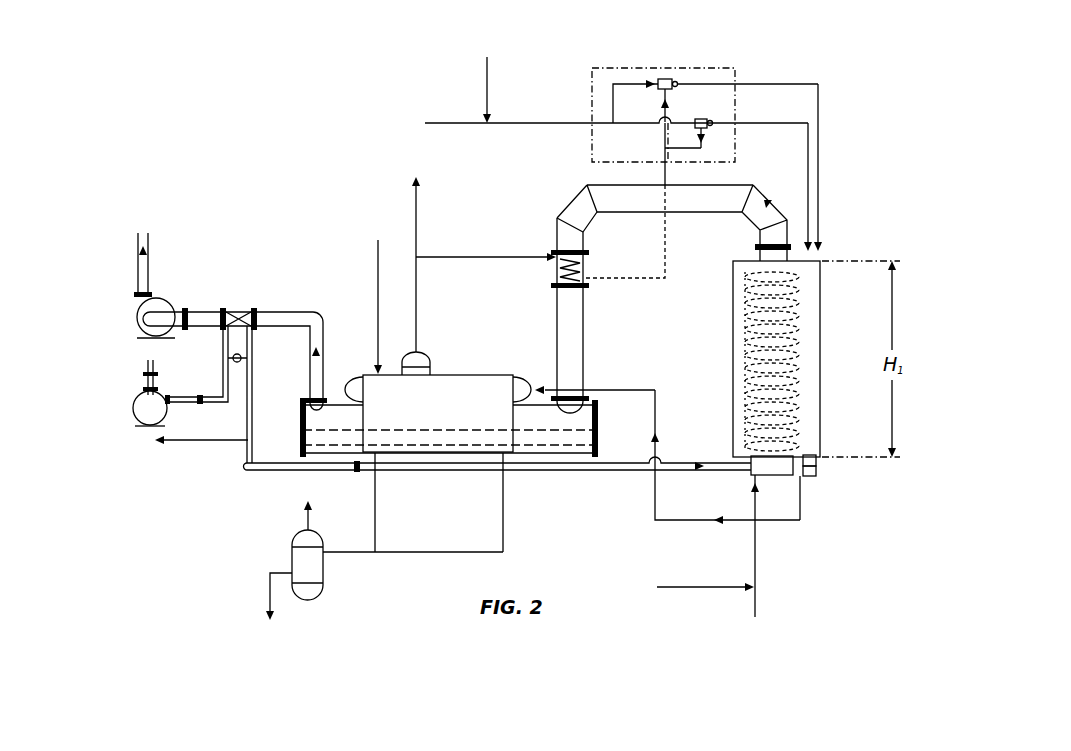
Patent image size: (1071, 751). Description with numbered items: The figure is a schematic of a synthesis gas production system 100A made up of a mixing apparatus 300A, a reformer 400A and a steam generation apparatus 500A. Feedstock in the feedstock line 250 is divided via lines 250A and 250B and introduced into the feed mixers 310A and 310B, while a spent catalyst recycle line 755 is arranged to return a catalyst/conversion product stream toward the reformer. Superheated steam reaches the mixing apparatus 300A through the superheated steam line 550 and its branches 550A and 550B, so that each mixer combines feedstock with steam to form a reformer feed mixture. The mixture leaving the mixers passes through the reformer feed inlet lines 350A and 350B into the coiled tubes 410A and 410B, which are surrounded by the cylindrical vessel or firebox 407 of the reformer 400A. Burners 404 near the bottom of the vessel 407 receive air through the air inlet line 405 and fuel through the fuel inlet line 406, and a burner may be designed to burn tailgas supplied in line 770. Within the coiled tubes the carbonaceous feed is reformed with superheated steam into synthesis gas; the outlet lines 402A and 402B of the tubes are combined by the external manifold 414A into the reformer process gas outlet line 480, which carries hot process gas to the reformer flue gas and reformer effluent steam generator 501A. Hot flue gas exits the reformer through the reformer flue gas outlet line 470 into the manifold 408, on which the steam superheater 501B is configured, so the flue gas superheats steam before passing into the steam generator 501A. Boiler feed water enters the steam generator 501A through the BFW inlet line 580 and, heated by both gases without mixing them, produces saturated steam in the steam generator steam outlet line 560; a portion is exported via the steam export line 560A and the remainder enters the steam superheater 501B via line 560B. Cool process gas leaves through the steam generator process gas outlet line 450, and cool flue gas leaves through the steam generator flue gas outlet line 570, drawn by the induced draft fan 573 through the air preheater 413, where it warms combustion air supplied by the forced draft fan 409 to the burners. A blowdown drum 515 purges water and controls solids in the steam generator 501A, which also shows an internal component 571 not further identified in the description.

The synthesis gas production system 100A is at (250, 100).
The spent catalyst recycle line 755 is at (486, 84).
The mixing apparatus 300A is at (592, 74).
The feed mixer 310A is at (672, 80).
The feedstock line 250A is at (612, 103).
The superheated steam line 550B is at (668, 118).
The feedstock line 250 is at (447, 126).
The feedstock line 250B is at (650, 125).
The feed mixer 310B is at (710, 130).
The superheated steam line 550A is at (680, 150).
The manifold 408 is at (778, 205).
The reformer feed inlet line 350A is at (818, 198).
The reformer feed inlet line 350B is at (808, 232).
The steam export line 560A is at (415, 203).
The steam line to superheater 560B is at (476, 257).
The steam superheater 501B is at (583, 262).
The BFW inlet line 580 is at (378, 270).
The steam generation apparatus 500A is at (561, 270).
The superheated steam line 550 is at (622, 282).
The reformer flue gas outlet line 470 is at (756, 247).
The coiled tube 410B is at (752, 305).
The reformer 400A is at (825, 310).
The coiled tube 410A is at (800, 352).
The cylindrical vessel 407 is at (822, 410).
The steam generator steam outlet line 560 is at (424, 350).
The steam generator flue gas outlet line 570 is at (148, 268).
The induced draft fan 573 is at (165, 300).
The air preheater 413 is at (237, 310).
The air inlet line 405 is at (735, 471).
The forced draft fan 409 is at (166, 406).
The steam generator process gas outlet line 450 is at (188, 442).
The reformer flue gas and reformer effluent steam generator 501A is at (436, 412).
The tubes 571 is at (460, 428).
The outlet line 402A is at (817, 459).
The outlet line 402B is at (817, 472).
The burner 404 is at (770, 477).
The external manifold 414A is at (806, 480).
The reformer process gas outlet line 480 is at (655, 522).
The tailgas line 770 is at (740, 586).
The fuel inlet line 406 is at (758, 605).
The blowdown drum 515 is at (292, 555).